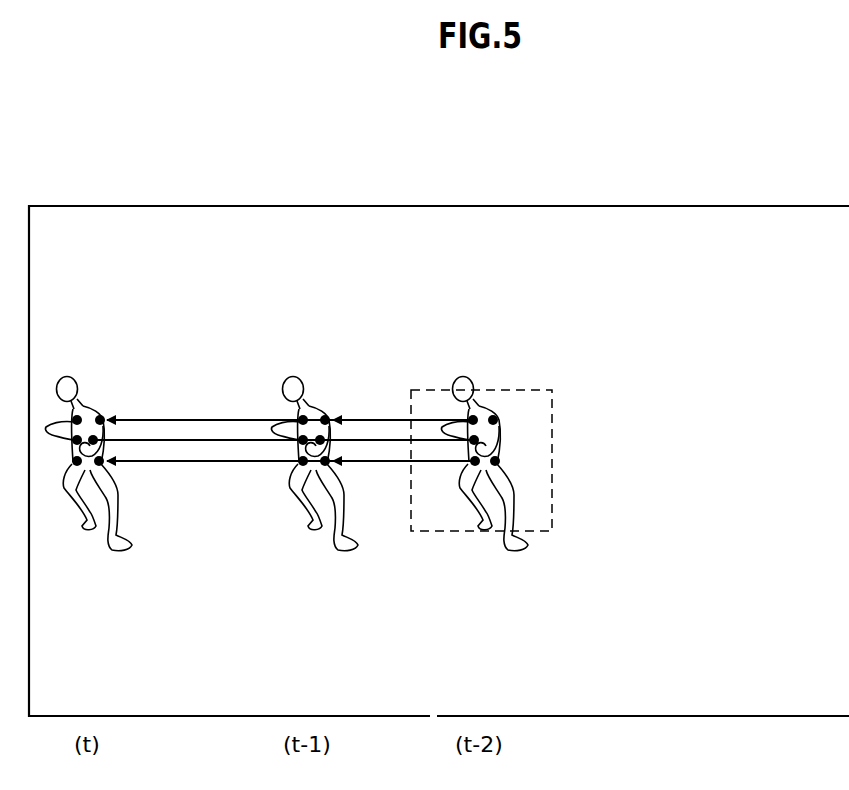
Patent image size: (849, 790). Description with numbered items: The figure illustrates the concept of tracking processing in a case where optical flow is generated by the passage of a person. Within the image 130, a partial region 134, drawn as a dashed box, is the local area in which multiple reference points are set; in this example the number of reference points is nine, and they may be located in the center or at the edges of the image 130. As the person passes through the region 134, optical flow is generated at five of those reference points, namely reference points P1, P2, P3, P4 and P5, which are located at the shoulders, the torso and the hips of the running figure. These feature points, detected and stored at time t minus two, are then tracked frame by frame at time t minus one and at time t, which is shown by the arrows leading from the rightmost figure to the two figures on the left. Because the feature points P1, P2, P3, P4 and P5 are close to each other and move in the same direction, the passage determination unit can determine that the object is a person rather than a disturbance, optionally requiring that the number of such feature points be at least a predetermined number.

The image 130 is at (658, 206).
The partial region 134 is at (428, 390).
The reference point P1 is at (475, 415).
The reference point P2 is at (478, 440).
The reference point P3 is at (476, 464).
The reference point P4 is at (496, 416).
The reference point P5 is at (496, 461).